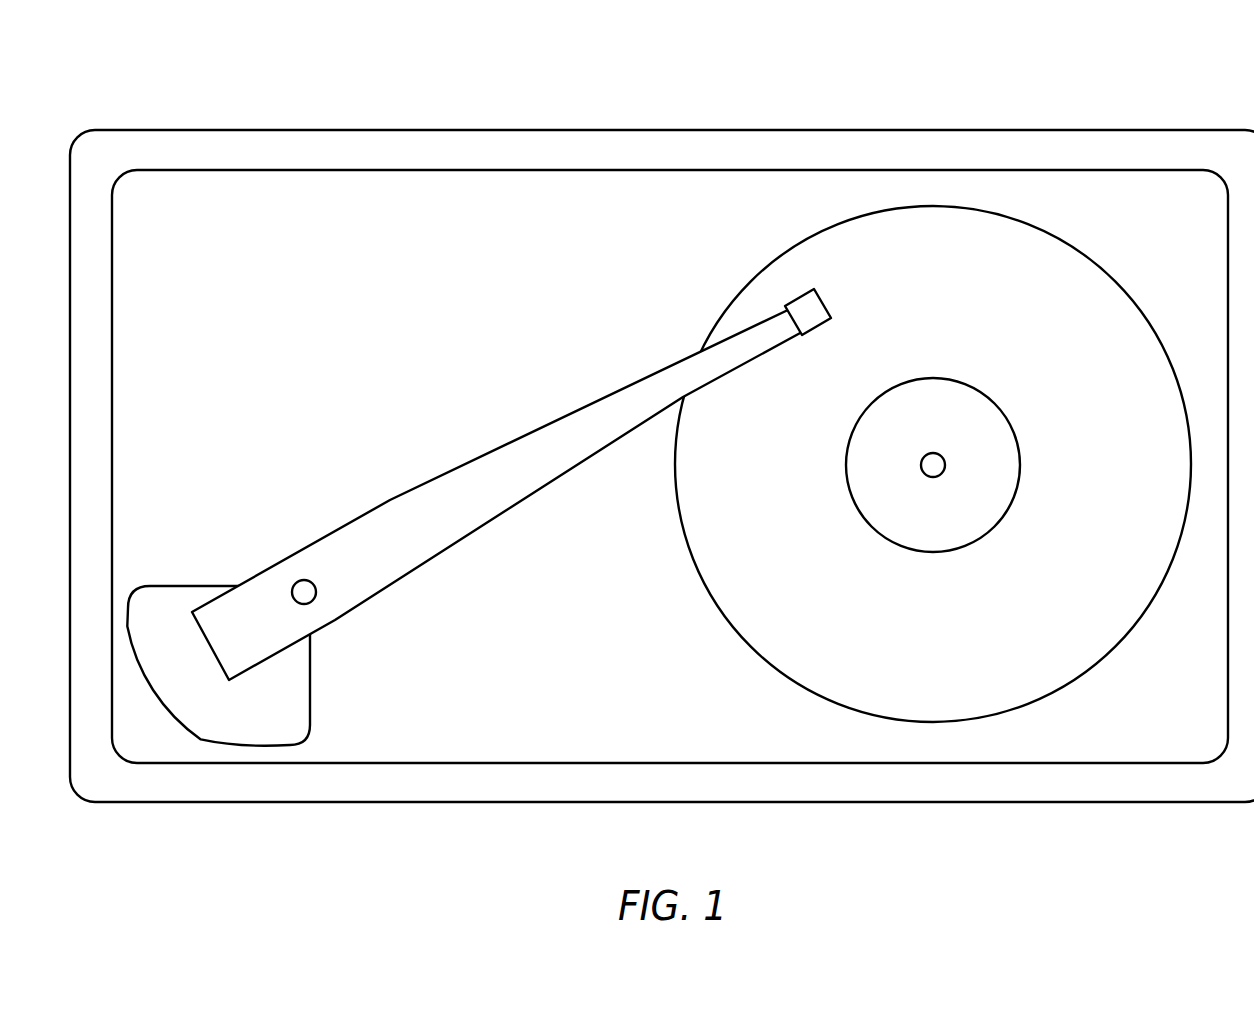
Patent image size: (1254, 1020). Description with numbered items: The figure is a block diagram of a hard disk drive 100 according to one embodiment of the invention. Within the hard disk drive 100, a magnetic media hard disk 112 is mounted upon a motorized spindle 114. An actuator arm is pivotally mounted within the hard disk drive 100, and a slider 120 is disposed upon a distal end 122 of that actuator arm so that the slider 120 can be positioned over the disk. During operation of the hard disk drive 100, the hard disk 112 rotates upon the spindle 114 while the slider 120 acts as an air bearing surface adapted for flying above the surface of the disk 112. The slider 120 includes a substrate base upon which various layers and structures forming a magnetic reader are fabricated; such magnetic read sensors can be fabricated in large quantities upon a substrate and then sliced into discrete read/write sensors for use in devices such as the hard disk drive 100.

The hard disk drive 100 is at (1088, 82).
The magnetic media hard disk 112 is at (780, 648).
The motorized spindle 114 is at (958, 398).
The slider 120 is at (823, 303).
The distal end 122 is at (605, 412).